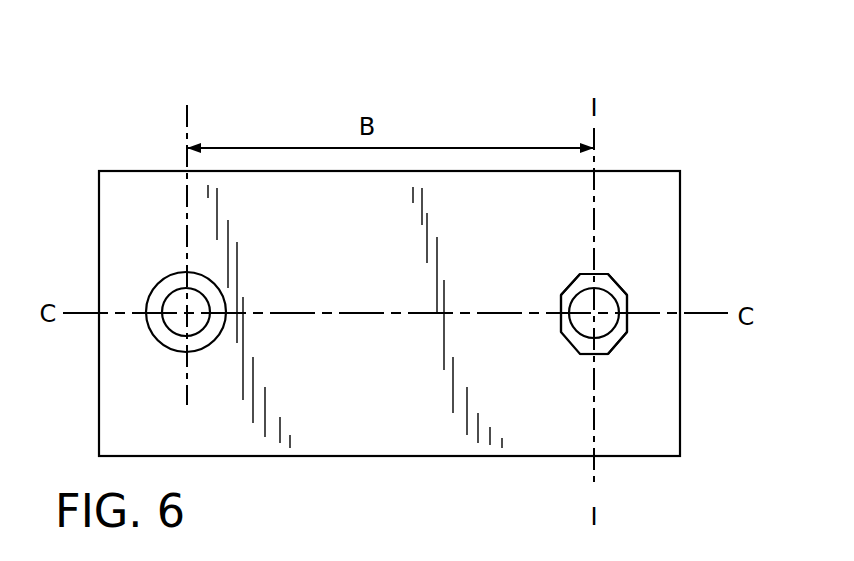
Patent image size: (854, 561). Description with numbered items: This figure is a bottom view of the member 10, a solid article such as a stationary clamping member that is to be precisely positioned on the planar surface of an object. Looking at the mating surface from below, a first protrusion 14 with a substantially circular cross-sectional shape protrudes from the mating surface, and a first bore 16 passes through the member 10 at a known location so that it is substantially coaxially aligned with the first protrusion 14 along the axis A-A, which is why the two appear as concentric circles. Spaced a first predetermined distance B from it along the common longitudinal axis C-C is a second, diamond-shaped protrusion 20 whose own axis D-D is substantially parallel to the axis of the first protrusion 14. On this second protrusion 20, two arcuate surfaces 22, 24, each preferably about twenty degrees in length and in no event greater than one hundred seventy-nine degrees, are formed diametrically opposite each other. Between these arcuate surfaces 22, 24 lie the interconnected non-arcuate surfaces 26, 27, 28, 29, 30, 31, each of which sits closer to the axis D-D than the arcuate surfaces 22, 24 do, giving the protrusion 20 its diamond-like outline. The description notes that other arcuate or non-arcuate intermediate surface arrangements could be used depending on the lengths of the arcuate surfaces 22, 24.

The member 10 is at (377, 247).
The first protrusion 14 is at (184, 352).
The first bore 16 is at (170, 323).
The second diamond-shaped protrusion 20 is at (572, 350).
The arcuate surface 22 is at (614, 277).
The arcuate surface 24 is at (606, 352).
The non-arcuate surface 26 is at (564, 291).
The non-arcuate surface 27 is at (560, 318).
The non-arcuate surface 28 is at (587, 357).
The non-arcuate surface 29 is at (630, 303).
The non-arcuate surface 30 is at (630, 324).
The non-arcuate surface 31 is at (619, 346).